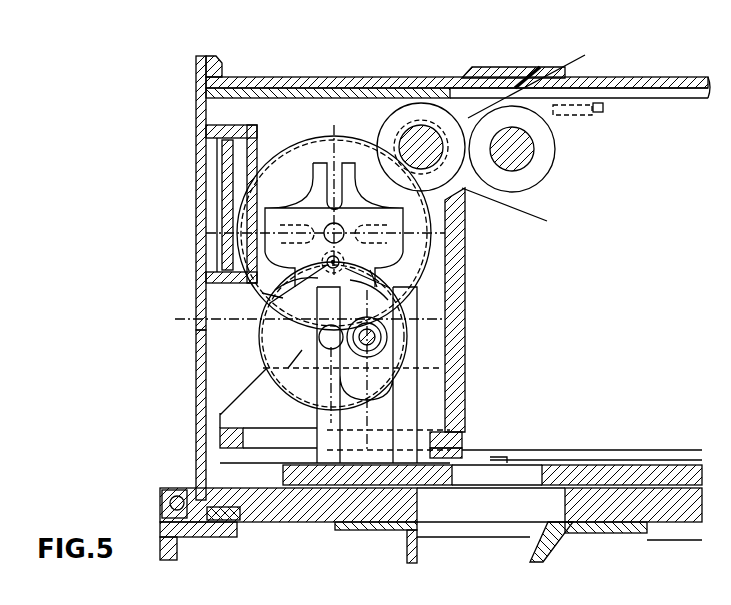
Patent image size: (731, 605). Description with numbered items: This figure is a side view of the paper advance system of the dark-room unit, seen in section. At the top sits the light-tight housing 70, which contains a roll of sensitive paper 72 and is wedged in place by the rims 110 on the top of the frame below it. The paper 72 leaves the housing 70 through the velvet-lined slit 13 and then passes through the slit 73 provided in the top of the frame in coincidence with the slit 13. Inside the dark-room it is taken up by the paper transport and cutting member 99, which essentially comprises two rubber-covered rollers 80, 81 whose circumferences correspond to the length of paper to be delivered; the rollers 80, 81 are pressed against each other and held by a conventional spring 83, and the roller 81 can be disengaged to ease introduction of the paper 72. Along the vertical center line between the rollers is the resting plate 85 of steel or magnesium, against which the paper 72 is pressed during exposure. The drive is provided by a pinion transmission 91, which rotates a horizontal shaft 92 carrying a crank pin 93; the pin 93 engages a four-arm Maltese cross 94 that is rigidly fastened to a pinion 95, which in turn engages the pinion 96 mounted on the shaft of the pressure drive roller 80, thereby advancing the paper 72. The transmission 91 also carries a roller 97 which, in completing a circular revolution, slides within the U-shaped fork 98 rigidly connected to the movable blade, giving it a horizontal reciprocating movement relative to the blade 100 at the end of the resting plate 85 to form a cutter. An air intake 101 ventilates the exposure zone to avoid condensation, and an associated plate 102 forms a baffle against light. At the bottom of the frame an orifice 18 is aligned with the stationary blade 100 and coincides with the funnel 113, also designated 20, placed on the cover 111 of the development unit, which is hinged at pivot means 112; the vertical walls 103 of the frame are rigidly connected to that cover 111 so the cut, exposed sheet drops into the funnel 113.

The slit 13 is at (530, 68).
The orifice 18 is at (495, 530).
The funnel 20 is at (552, 553).
The light-tight housing 70 is at (258, 77).
The sensitive paper 72 is at (585, 55).
The slit 73 is at (497, 92).
The pressure drive roller 80 is at (440, 112).
The roller 81 is at (540, 123).
The spring 83 is at (583, 112).
The resting plate 85 is at (458, 268).
The pinion transmission 91 is at (357, 333).
The horizontal shaft 92 is at (322, 338).
The crank pin 93 is at (330, 268).
The four-arm Maltese cross 94 is at (313, 190).
The pinion 95 is at (281, 152).
The pinion 96 is at (400, 132).
The roller 97 is at (303, 372).
The U-shaped fork 98 is at (400, 412).
The paper transport and cutting member 99 is at (622, 465).
The blade 100 is at (462, 457).
The air intake 101 is at (200, 219).
The plate 102 is at (228, 245).
The vertical walls 103 is at (197, 378).
The rims 110 is at (196, 68).
The cover 111 is at (273, 520).
The pivot means 112 is at (162, 488).
The funnel 113 is at (410, 553).